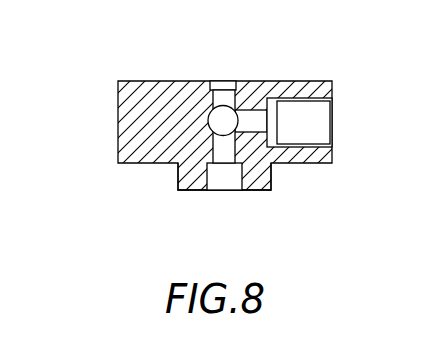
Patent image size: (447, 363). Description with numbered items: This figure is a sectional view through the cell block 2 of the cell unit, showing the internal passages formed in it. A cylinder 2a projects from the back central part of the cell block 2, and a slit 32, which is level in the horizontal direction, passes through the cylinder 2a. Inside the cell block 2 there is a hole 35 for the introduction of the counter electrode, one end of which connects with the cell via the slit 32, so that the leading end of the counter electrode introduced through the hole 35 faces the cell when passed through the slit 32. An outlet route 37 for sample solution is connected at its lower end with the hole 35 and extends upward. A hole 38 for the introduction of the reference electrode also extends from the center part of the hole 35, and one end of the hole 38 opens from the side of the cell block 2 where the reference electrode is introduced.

The cell block 2 is at (118, 118).
The cylinder 2a is at (258, 183).
The slit 32 is at (217, 183).
The hole for the introduction of the counter electrode 35 is at (225, 82).
The outlet route for sample solution 37 is at (215, 121).
The hole for the introduction of the reference electrode 38 is at (257, 117).